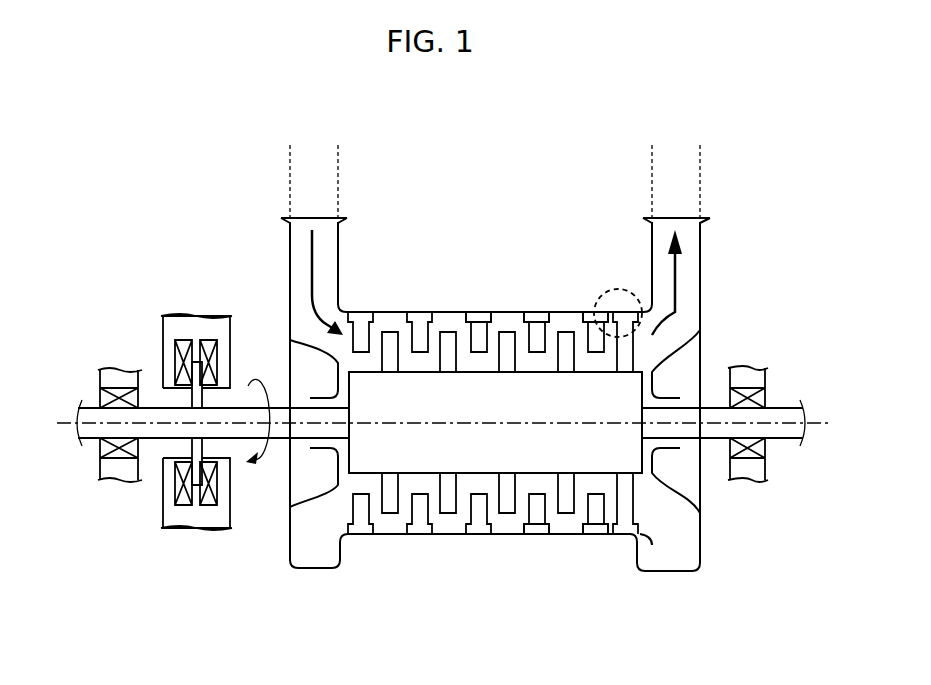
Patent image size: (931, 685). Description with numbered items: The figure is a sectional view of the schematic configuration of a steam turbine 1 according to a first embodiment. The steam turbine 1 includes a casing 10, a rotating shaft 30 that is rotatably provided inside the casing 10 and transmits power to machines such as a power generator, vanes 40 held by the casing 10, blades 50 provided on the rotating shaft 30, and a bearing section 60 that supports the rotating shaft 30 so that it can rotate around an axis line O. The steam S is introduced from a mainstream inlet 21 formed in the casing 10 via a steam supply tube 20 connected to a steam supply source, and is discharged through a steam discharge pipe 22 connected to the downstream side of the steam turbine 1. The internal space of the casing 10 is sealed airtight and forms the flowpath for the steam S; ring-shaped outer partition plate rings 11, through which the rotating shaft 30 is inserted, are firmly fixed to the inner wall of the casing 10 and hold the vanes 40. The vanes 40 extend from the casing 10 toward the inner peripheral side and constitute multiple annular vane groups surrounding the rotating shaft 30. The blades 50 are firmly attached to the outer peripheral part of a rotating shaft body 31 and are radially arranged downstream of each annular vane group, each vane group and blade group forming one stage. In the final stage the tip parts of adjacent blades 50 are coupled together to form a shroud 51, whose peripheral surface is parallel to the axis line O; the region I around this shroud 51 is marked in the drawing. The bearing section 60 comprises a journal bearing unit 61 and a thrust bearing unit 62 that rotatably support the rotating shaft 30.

The steam turbine 1 is at (694, 587).
The casing 10 is at (313, 572).
The outer partition plate rings 11 is at (592, 314).
The steam supply tube 20 is at (338, 175).
The mainstream inlet 21 is at (288, 243).
The steam discharge pipe 22 is at (700, 175).
The rotating shaft 30 is at (92, 406).
The rotating shaft body 31 is at (430, 458).
The vanes 40 is at (473, 328).
The blades 50 is at (508, 510).
The shroud 51 is at (620, 318).
The bearing section 60 is at (442, 406).
The journal bearing unit 61 is at (118, 480).
The thrust bearing unit 62 is at (193, 530).
The steam S is at (312, 278).
The axis line O is at (432, 424).
The region of interest I is at (603, 292).